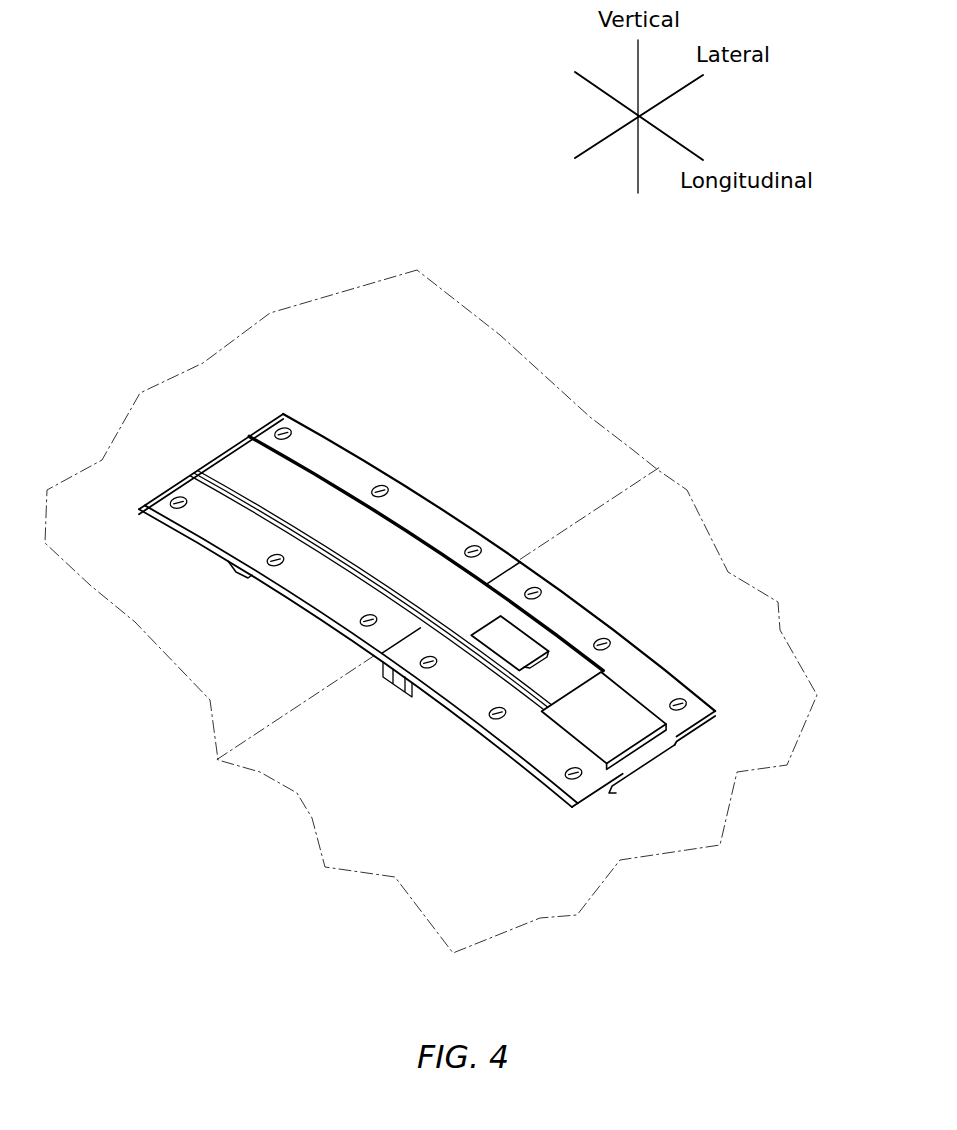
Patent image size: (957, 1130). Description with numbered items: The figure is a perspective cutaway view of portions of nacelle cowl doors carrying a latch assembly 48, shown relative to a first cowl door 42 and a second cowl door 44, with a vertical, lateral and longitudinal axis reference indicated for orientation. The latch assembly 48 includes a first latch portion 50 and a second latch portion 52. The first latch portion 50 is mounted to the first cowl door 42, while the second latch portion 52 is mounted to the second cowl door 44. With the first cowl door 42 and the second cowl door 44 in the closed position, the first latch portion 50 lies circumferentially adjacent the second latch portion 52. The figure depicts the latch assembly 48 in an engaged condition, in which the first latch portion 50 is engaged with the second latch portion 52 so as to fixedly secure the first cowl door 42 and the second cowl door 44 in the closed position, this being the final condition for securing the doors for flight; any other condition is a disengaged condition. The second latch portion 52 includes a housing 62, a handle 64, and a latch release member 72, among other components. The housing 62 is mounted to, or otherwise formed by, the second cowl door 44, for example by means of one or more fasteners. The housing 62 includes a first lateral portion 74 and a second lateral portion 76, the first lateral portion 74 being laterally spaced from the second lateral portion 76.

The first cowl door 42 is at (795, 722).
The second cowl door 44 is at (342, 315).
The latch assembly 48 is at (480, 454).
The first latch portion 50 is at (490, 759).
The second latch portion 52 is at (247, 590).
The housing 62 is at (328, 457).
The handle 64 is at (403, 553).
The latch release member 72 is at (510, 657).
The first lateral portion 74 is at (459, 540).
The second lateral portion 76 is at (343, 608).